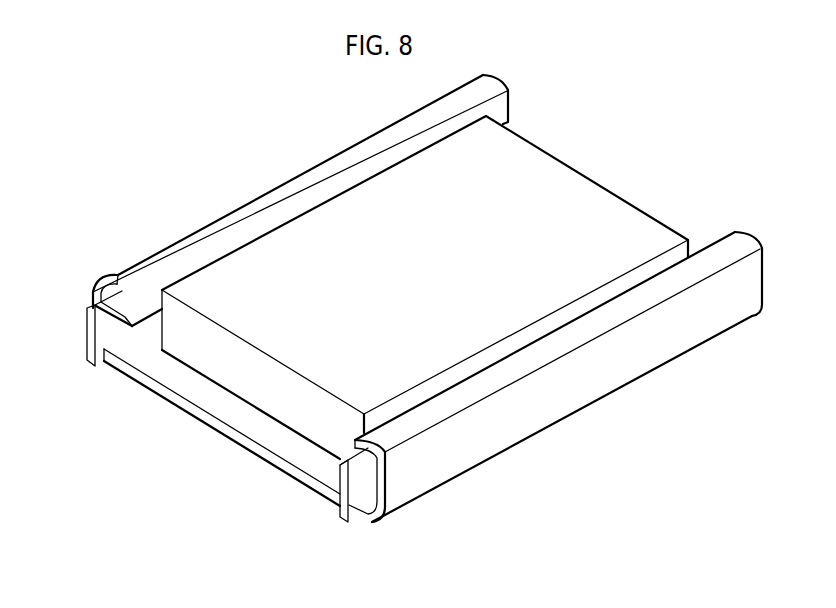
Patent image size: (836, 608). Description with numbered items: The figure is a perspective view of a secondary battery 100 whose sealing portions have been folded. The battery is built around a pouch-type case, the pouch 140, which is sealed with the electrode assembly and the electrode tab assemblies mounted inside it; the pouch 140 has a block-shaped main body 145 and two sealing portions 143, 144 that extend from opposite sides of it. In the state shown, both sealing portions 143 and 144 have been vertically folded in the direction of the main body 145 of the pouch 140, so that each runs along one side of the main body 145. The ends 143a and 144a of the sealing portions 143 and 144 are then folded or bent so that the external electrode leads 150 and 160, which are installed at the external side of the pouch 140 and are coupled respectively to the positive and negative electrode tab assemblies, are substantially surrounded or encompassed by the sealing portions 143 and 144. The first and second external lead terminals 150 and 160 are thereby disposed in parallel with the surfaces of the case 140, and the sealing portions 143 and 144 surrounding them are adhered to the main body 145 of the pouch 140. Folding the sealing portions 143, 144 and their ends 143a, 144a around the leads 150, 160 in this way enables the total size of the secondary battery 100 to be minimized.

The secondary battery 100 is at (82, 106).
The pouch 140 is at (611, 156).
The sealing portion 143 is at (597, 383).
The end of sealing portion 143a is at (340, 463).
The sealing portion 144 is at (248, 215).
The end of sealing portion 144a is at (122, 326).
The main body 145 is at (280, 347).
The external positive electrode lead 150 is at (340, 518).
The external negative electrode lead 160 is at (87, 360).